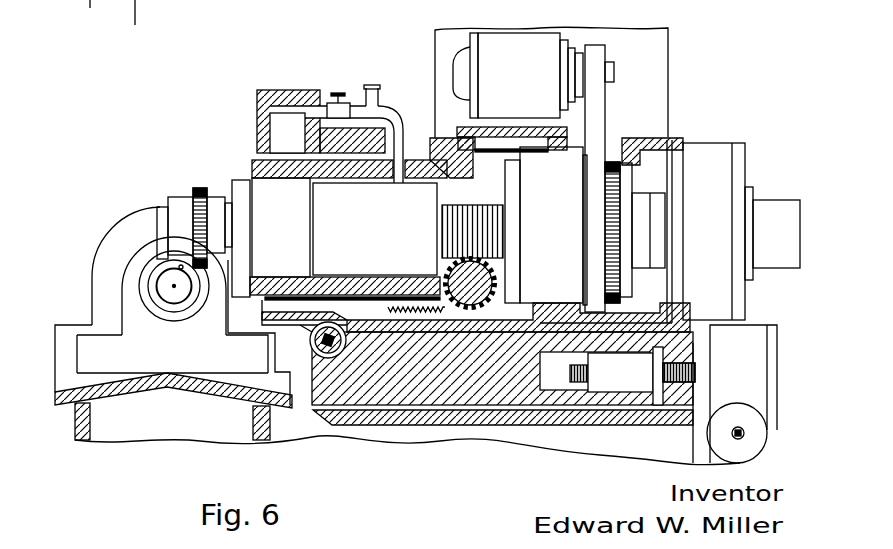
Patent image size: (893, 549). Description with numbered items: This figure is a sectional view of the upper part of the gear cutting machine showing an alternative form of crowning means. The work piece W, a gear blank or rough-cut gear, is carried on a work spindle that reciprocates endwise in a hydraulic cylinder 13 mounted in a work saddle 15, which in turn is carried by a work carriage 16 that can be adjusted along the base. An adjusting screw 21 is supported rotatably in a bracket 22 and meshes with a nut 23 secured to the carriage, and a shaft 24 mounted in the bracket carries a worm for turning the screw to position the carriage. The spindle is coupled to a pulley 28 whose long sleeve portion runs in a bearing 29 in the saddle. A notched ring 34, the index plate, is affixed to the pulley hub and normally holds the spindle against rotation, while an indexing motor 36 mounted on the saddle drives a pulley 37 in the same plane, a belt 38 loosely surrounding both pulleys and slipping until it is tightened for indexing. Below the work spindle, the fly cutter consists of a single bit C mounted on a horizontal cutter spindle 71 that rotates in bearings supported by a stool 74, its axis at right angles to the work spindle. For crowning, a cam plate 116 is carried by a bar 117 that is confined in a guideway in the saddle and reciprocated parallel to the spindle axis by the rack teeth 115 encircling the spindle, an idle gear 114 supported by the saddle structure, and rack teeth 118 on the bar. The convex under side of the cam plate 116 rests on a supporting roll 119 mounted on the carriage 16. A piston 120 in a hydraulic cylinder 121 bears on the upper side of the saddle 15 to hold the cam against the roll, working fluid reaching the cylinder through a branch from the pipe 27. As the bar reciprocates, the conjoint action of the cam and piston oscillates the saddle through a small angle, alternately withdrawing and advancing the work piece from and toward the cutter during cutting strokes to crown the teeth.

The hydraulic cylinder 13 is at (418, 196).
The work saddle 15 is at (258, 160).
The work carriage 16 is at (432, 397).
The adjusting screw 21 is at (679, 386).
The bracket 22 is at (695, 447).
The nut 23 is at (620, 382).
The shaft 24 is at (745, 437).
The pipe 27 is at (380, 92).
The pulley 28 is at (583, 207).
The bearing 29 is at (528, 172).
The notched ring 34 is at (617, 192).
The indexing motor 36 is at (523, 48).
The pulley 37 is at (606, 54).
The belt 38 is at (598, 110).
The cutter spindle 71 is at (172, 325).
The stool 74 is at (105, 383).
The idle gear 114 is at (447, 268).
The rack teeth 115 is at (488, 205).
The cam plate 116 is at (307, 325).
The bar 117 is at (357, 300).
The rack teeth 118 is at (428, 310).
The supporting roll 119 is at (320, 348).
The piston 120 is at (273, 132).
The hydraulic cylinder 121 is at (292, 95).
The work piece W is at (199, 188).
The bit C is at (180, 267).